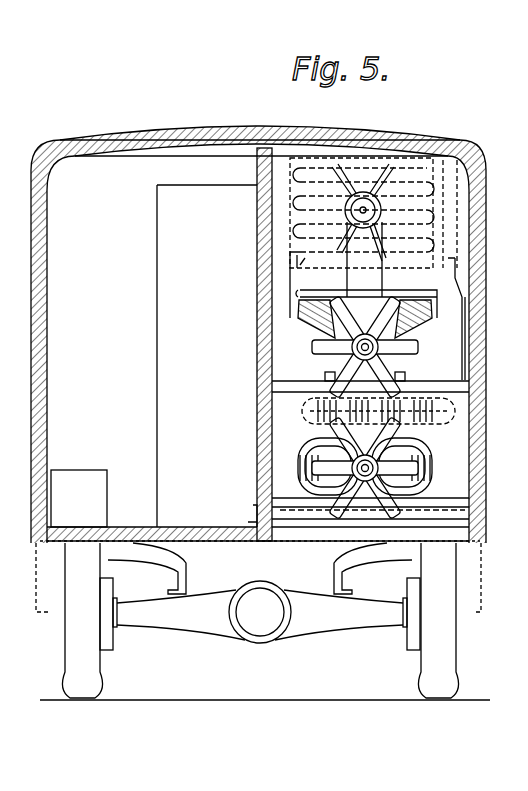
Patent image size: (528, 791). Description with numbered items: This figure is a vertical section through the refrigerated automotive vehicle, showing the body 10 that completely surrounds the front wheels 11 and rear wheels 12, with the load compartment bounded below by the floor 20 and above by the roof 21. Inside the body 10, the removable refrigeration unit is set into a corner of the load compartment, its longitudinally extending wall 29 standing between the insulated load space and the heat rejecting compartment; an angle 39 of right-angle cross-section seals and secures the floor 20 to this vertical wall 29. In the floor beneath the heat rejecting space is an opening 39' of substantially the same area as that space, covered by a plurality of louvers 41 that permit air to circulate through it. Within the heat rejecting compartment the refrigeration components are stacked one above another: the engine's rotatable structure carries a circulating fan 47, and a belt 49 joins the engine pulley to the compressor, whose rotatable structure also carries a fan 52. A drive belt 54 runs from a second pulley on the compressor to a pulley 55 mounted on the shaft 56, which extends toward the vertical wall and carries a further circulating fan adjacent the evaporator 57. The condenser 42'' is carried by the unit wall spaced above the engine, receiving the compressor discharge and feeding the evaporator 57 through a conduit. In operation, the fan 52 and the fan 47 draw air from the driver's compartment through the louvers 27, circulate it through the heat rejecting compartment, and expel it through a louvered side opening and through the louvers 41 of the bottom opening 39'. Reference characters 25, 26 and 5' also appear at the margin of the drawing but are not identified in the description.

The body 10 is at (102, 136).
The roof 21 is at (193, 131).
The floor 20 is at (172, 525).
The longitudinally extending wall 29 is at (257, 362).
The angle 39 is at (234, 513).
The opening 39' is at (357, 536).
The shaft 56 is at (347, 222).
The evaporator 57 is at (426, 263).
The pulley 55 is at (363, 205).
The drive belt 54 is at (396, 285).
The fan 52 is at (419, 352).
The condenser 42'' is at (410, 411).
The belt 49 is at (390, 408).
The circulating fan 47 is at (338, 512).
The louvers 41 is at (297, 542).
The rear wheels 12 is at (101, 678).
The front wheels 11 is at (260, 596).
The wall 25 is at (5, 271).
The wall 26 is at (5, 357).
The section 5' is at (5, 412).
The louvers 27 is at (6, 442).